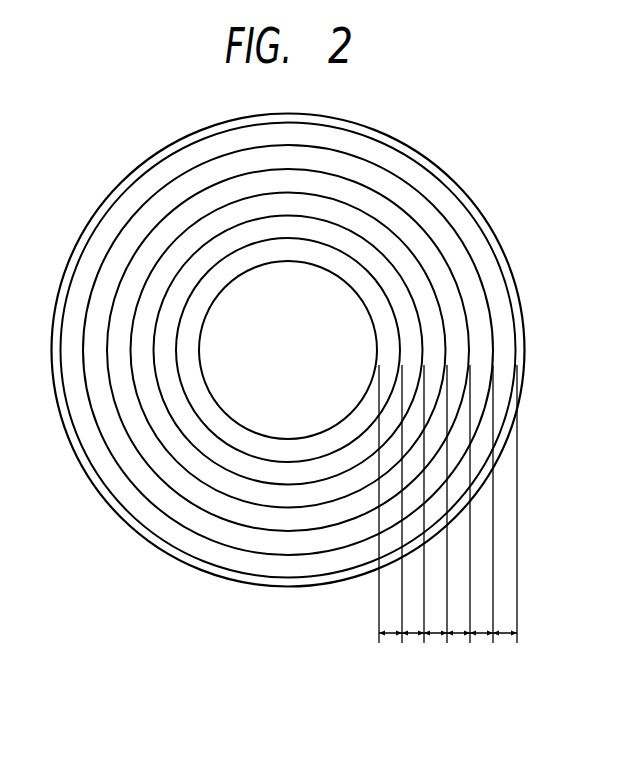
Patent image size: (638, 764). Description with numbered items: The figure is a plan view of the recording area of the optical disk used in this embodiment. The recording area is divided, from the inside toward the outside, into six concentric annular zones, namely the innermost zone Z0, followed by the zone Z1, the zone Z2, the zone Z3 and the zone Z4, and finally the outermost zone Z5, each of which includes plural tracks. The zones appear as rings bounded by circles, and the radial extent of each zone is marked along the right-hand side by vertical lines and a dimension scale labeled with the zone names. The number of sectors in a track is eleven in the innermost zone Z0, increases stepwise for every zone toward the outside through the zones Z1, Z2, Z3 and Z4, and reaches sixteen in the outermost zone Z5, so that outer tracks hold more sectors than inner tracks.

The innermost zone Z0 is at (392, 636).
The zone Z1 is at (413, 636).
The zone Z2 is at (437, 636).
The zone Z3 is at (460, 636).
The zone Z4 is at (482, 636).
The outermost zone Z5 is at (505, 636).